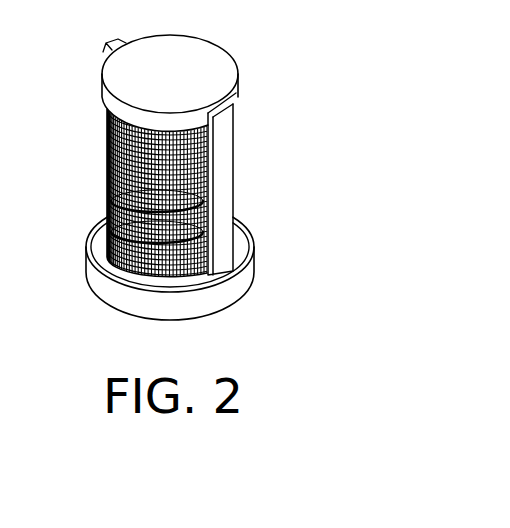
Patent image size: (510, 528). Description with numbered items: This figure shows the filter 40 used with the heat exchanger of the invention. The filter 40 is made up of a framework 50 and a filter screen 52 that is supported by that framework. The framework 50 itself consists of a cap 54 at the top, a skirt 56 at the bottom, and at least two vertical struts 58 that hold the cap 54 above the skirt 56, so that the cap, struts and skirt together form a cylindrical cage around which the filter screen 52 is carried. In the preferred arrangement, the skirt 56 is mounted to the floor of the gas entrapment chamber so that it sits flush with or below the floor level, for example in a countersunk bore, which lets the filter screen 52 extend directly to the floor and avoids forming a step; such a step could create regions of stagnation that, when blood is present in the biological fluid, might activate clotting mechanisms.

The filter 40 is at (219, 170).
The framework 50 is at (238, 182).
The filter screen 52 is at (205, 234).
The cap 54 is at (207, 62).
The skirt 56 is at (232, 293).
The vertical struts 58 is at (223, 153).